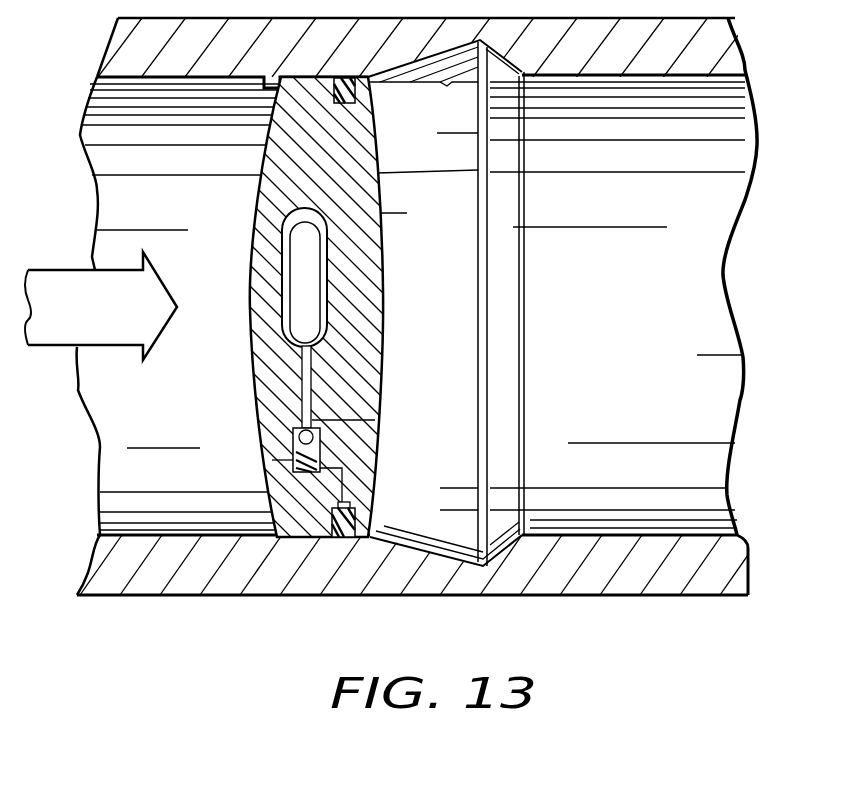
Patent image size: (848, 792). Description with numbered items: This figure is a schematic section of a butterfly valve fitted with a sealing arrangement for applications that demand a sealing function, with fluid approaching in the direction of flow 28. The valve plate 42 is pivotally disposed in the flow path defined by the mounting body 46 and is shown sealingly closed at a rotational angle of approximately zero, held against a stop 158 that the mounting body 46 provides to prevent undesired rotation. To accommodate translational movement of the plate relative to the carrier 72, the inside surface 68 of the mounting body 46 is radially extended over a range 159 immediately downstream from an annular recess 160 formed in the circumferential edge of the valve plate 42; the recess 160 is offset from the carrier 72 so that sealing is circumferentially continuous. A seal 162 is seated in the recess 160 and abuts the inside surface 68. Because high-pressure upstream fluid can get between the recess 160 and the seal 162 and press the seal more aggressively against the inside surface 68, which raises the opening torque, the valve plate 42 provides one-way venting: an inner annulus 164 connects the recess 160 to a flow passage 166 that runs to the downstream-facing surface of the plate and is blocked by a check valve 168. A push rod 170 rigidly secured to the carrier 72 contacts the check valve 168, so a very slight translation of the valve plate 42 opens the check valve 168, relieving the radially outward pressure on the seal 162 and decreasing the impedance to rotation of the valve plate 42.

The direction of flow 28 is at (60, 270).
The valve plate 42 is at (373, 163).
The mounting body 46 is at (687, 570).
The inside surface 68 is at (552, 522).
The carrier shaft 72 is at (290, 250).
The stop 158 is at (258, 92).
The range 159 is at (447, 84).
The annular recess 160 is at (358, 535).
The seal 162 is at (350, 75).
The inner annulus 164 is at (352, 507).
The flow passage 166 is at (377, 427).
The check valve 168 is at (293, 455).
The push rod 170 is at (290, 372).